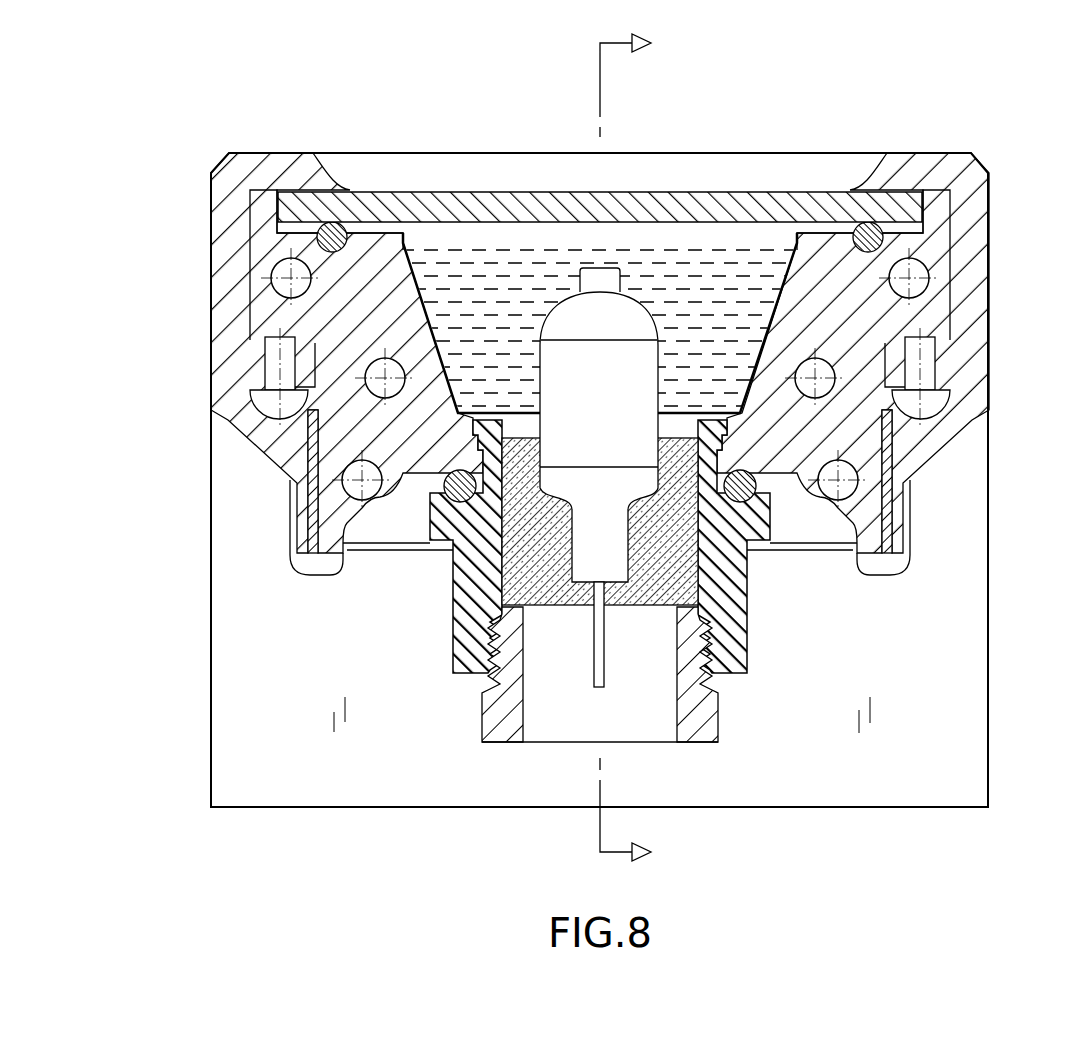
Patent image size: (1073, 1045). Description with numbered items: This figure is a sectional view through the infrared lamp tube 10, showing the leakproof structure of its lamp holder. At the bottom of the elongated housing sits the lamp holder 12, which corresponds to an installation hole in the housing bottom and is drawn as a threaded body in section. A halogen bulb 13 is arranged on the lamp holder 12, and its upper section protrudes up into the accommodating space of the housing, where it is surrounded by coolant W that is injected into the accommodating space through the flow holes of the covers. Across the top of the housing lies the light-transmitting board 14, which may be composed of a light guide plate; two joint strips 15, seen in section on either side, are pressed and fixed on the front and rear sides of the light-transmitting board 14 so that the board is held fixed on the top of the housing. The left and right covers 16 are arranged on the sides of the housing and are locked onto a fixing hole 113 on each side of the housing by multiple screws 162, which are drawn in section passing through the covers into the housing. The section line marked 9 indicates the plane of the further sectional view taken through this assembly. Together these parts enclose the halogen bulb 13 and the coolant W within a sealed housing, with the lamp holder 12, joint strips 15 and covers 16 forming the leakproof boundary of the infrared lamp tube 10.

The infrared lamp tube 10 is at (554, 449).
The lamp holder 12 is at (750, 613).
The halogen bulb 13 is at (641, 320).
The light-transmitting board 14 is at (470, 207).
The joint strips 15 is at (230, 222).
The left and right covers 16 is at (960, 530).
The fixing hole 113 is at (494, 379).
The screws 162 is at (364, 373).
The coolant W is at (731, 290).
The section line 9- 9 is at (642, 449).